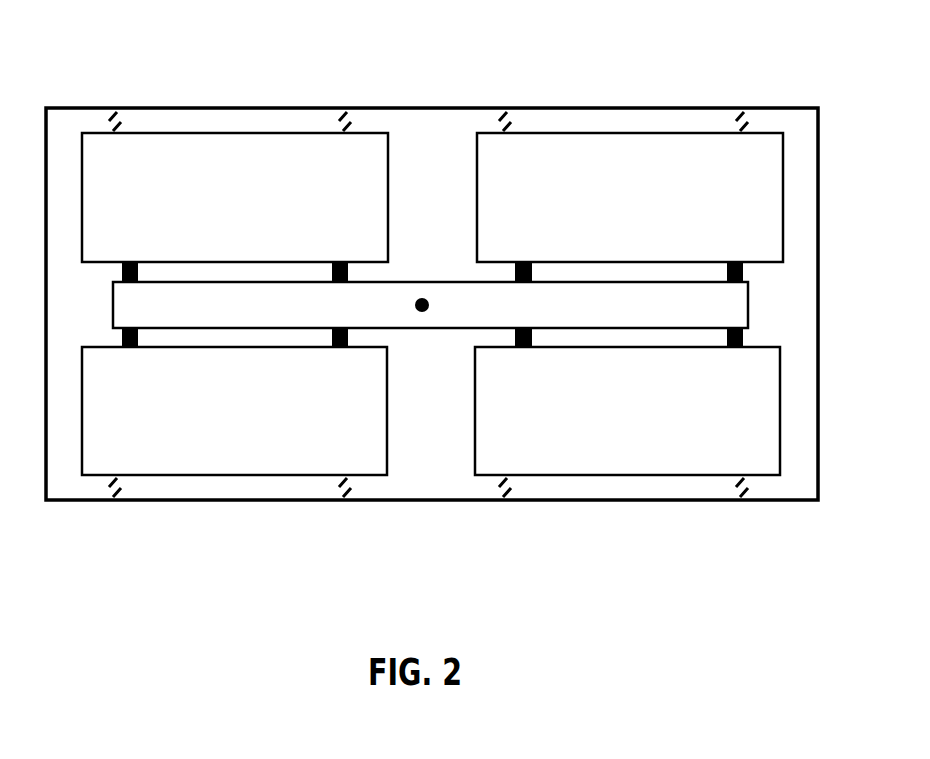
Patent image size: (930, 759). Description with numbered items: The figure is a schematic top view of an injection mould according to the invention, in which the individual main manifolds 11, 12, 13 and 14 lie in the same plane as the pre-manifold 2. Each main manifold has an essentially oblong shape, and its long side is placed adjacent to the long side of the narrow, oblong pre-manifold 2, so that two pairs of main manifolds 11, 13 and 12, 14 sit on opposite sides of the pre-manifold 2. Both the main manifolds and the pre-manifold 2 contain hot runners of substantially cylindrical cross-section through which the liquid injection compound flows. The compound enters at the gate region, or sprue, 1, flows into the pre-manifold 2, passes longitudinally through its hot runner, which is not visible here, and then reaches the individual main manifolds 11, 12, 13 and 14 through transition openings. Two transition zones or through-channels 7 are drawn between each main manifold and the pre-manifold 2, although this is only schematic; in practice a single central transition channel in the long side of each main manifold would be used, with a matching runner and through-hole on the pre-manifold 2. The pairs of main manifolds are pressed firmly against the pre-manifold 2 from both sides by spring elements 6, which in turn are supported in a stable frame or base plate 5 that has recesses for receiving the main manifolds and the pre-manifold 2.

The gate region 1 is at (426, 290).
The pre-manifold 2 is at (430, 305).
The substrate 5 is at (458, 500).
The spring elements 6 is at (340, 117).
The through-channels 7 is at (743, 272).
The main manifold 11 is at (235, 197).
The main manifold 12 is at (630, 197).
The main manifold 13 is at (234, 411).
The main manifold 14 is at (627, 411).